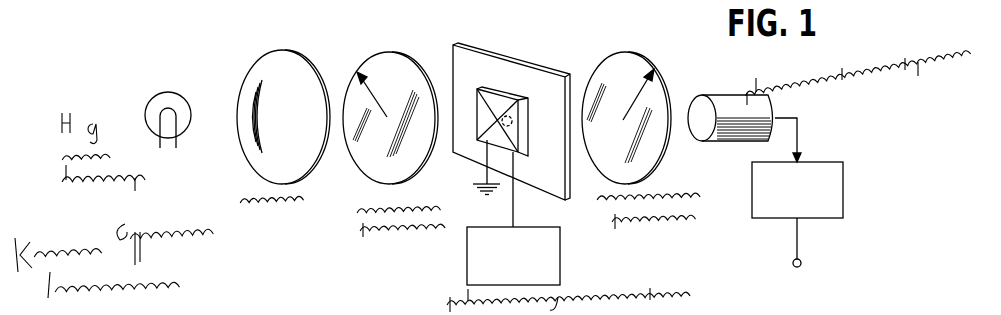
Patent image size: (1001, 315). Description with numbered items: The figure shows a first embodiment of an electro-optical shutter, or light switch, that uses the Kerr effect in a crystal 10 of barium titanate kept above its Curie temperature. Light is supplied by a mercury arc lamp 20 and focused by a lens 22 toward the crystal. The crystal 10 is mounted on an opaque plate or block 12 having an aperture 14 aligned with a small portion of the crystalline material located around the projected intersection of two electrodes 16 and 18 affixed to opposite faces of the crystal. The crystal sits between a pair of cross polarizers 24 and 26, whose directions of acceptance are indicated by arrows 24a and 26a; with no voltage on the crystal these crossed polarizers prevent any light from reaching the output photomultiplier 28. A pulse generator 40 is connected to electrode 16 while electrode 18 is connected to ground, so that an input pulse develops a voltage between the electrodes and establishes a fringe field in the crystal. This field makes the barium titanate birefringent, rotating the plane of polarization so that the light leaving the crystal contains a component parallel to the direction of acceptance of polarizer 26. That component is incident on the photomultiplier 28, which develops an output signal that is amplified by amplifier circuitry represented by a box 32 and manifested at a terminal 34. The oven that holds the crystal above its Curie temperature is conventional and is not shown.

The crystal 10 is at (476, 98).
The opaque plate or block 12 is at (512, 70).
The aperture 14 is at (508, 116).
The electrode 16 is at (499, 90).
The electrode 18 is at (502, 124).
The mercury arc lamp 20 is at (158, 101).
The lens 22 is at (271, 62).
The polarizer 24 is at (365, 172).
The arrow 24a is at (370, 92).
The polarizer 26 is at (629, 57).
The arrow 26a is at (641, 96).
The photomultiplier 28 is at (722, 100).
The box 32 is at (815, 170).
The terminal 34 is at (801, 265).
The pulse generator 40 is at (472, 232).